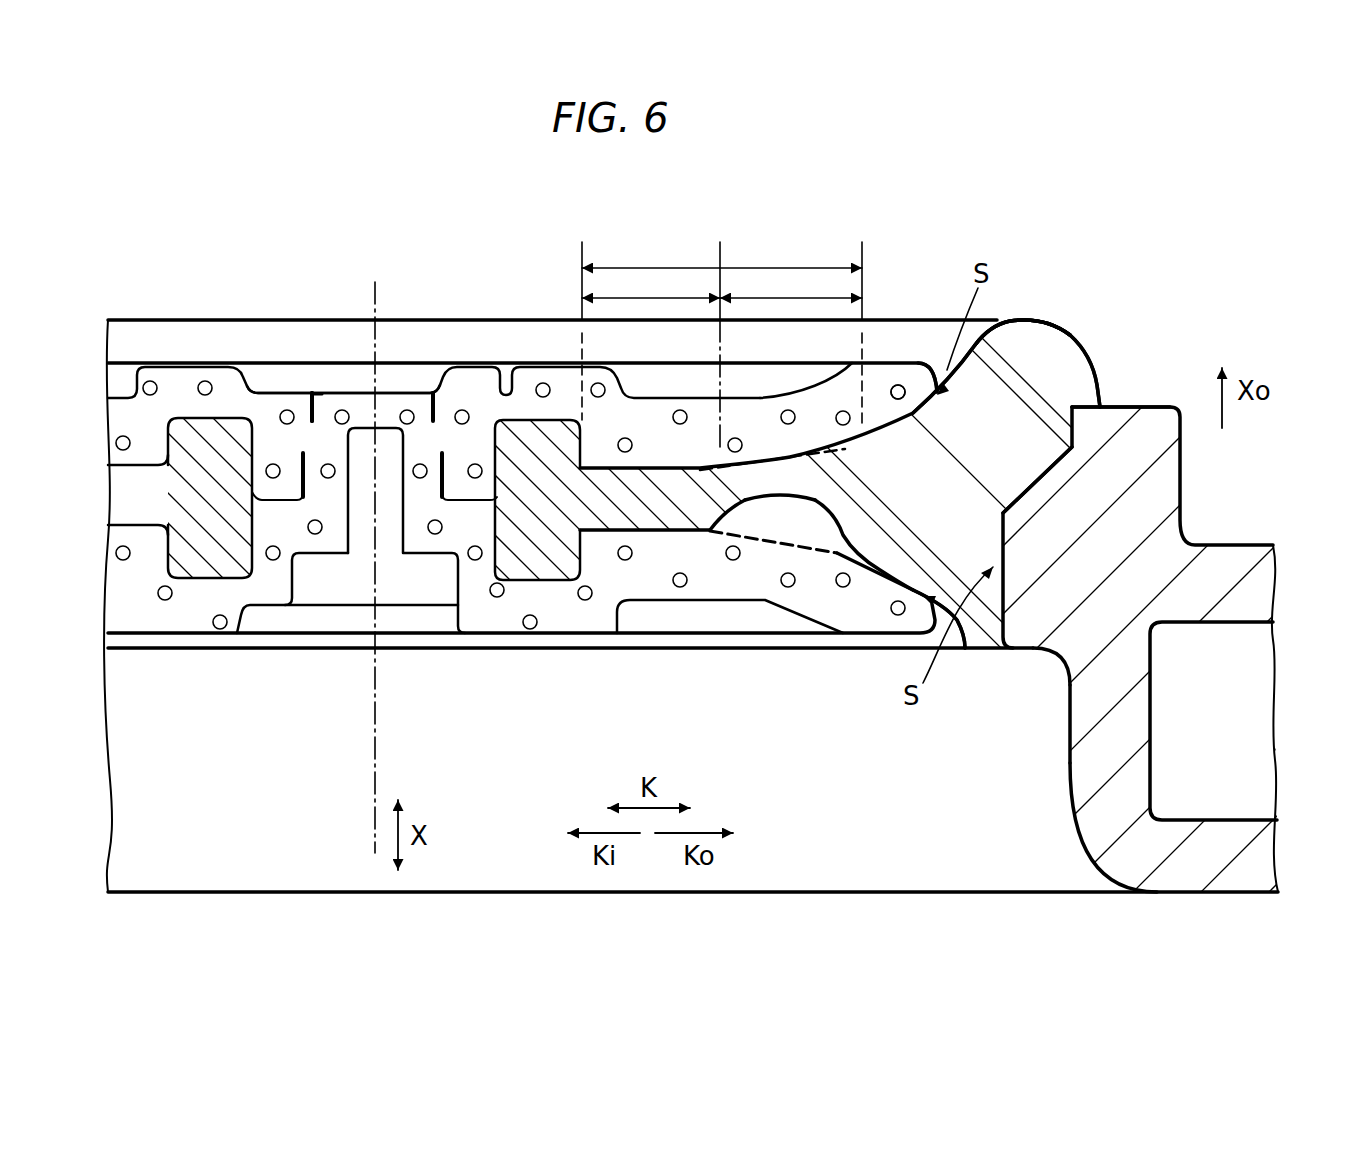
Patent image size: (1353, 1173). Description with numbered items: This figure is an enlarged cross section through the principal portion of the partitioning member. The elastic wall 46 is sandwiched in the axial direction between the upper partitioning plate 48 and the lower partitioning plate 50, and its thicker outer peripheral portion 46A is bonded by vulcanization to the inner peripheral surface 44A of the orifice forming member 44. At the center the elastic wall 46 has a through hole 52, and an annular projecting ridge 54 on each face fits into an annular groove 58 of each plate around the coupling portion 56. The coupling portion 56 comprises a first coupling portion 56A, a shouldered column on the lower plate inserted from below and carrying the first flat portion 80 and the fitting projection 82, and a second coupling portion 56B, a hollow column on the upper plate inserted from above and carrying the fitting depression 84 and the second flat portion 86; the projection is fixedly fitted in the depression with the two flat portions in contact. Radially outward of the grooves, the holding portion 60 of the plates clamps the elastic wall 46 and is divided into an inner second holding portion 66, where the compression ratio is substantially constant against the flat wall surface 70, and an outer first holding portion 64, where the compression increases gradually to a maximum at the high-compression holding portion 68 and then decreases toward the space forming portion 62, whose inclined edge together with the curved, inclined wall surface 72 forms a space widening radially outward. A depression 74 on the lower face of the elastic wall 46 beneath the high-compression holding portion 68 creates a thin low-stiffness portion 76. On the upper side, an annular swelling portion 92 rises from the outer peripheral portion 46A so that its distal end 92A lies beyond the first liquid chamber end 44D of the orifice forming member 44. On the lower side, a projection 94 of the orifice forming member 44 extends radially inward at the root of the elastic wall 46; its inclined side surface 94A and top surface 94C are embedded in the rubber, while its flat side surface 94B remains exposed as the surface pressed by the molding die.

The orifice forming member 44 is at (1133, 708).
The inner peripheral surface 44A is at (1067, 770).
The first liquid chamber end 44D is at (1157, 405).
The elastic wall 46 is at (628, 520).
The outer peripheral portion 46A is at (1007, 423).
The partitioning plate 48 is at (543, 375).
The partitioning plate 50 is at (553, 625).
The through hole 52 is at (262, 560).
The projecting ridge 54 is at (190, 430).
The coupling portion 56 is at (372, 407).
The first coupling portion 56A is at (397, 410).
The second coupling portion 56B is at (267, 420).
The annular groove 58 is at (207, 577).
The holding portion 60 is at (725, 268).
The space forming portion 62 is at (893, 370).
The first holding portion 64 is at (798, 297).
The second holding portion 66 is at (647, 297).
The high-compression holding portion 68 is at (783, 473).
The wall surface 70 is at (660, 535).
The wall surface 72 is at (827, 555).
The depression 74 is at (790, 520).
The low-stiffness portion 76 is at (747, 490).
The first flat portion 80 is at (283, 497).
The fitting projection 82 is at (327, 413).
The fitting depression 84 is at (325, 597).
The second flat portion 86 is at (462, 502).
The swelling portion 92 is at (1043, 347).
The distal end 92A is at (1040, 312).
The projection 94 is at (1004, 657).
The side surface 94A is at (1035, 470).
The side surface 94B is at (1026, 663).
The top surface 94C is at (965, 655).